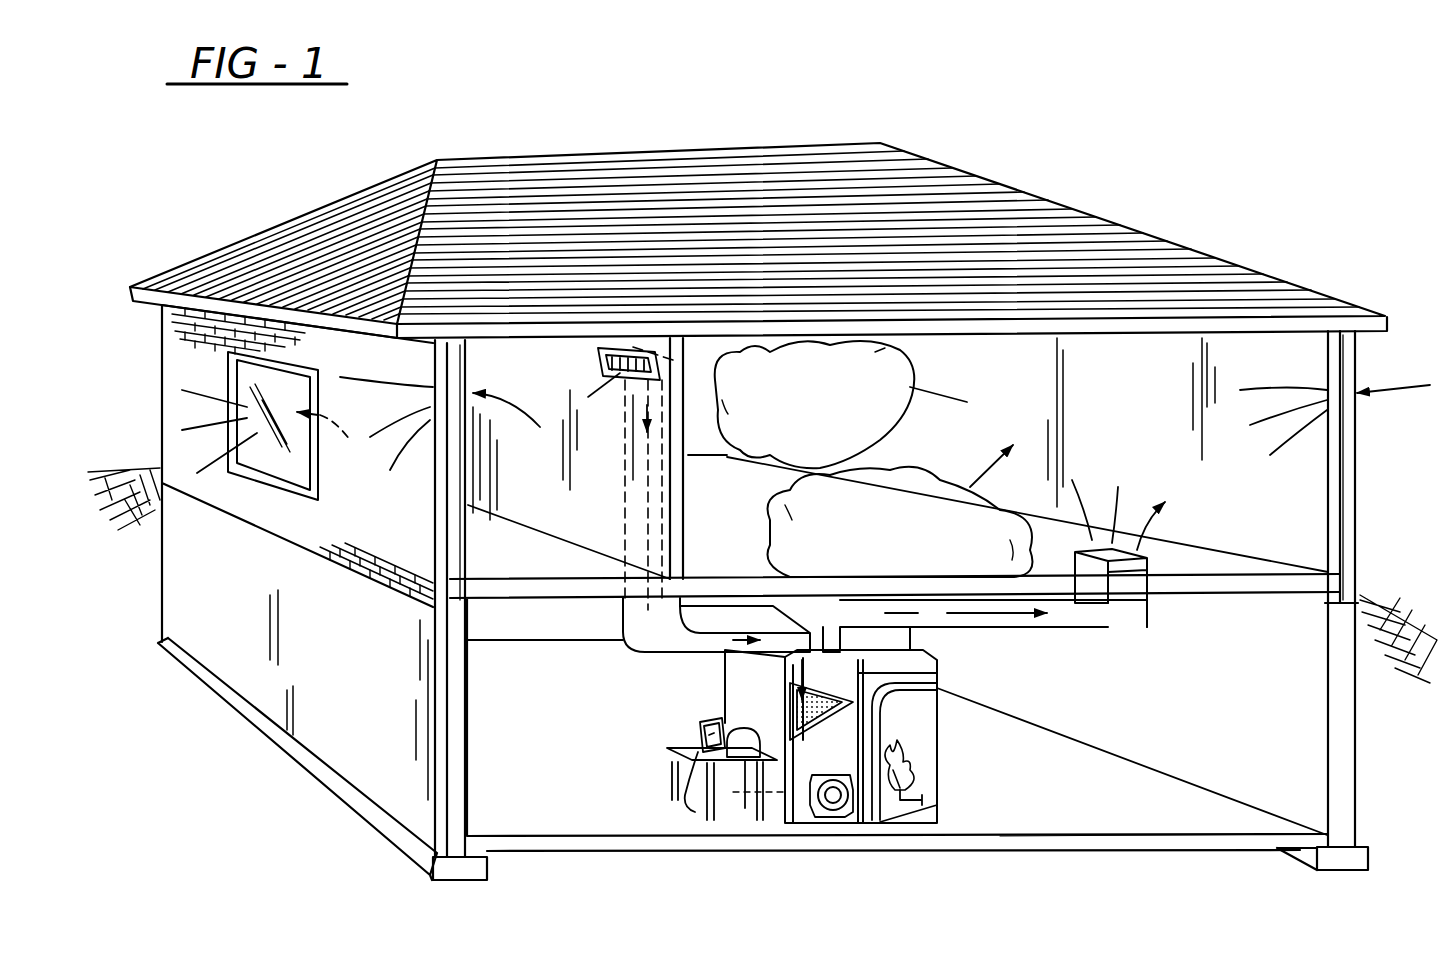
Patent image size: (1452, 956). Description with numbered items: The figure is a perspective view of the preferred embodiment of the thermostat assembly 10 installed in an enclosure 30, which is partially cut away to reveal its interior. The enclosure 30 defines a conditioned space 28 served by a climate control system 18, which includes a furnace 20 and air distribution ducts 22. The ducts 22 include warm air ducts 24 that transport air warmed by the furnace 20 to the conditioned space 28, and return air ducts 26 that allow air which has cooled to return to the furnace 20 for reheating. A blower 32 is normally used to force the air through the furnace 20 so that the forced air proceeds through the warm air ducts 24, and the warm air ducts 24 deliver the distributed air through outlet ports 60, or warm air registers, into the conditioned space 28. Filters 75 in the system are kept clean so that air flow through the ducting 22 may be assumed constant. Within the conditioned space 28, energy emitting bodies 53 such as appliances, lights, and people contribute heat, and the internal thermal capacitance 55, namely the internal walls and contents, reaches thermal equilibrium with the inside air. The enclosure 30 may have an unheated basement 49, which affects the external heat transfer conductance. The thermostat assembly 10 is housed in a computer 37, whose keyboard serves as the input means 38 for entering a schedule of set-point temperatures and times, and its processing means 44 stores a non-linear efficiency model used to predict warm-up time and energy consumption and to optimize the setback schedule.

The thermostat assembly 10 is at (685, 742).
The climate control system 18 is at (898, 736).
The furnace 20 is at (940, 785).
The air distribution ducts 22 is at (653, 645).
The warm air ducts 24 is at (1090, 627).
The return air ducts 26 is at (653, 648).
The conditioned space 28 is at (508, 480).
The enclosure 30 is at (1127, 222).
The blower 32 is at (810, 788).
The computer 37 is at (713, 722).
The input means 38 is at (683, 810).
The processing means 44 is at (757, 723).
The unheated basement 49 is at (1201, 757).
The energy emitting bodies 53 is at (866, 547).
The internal thermal capacitance 55 is at (783, 417).
The outlet ports 60 is at (1147, 560).
The filters 75 is at (853, 681).